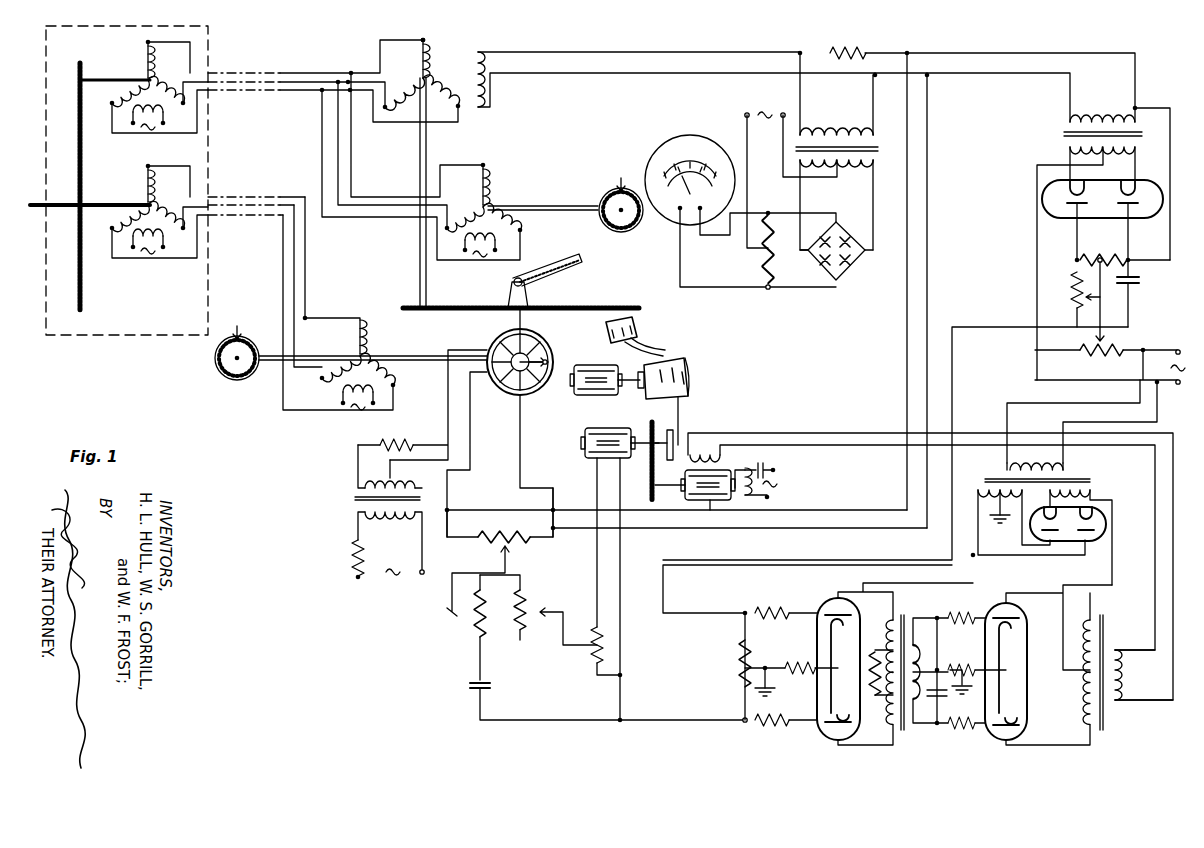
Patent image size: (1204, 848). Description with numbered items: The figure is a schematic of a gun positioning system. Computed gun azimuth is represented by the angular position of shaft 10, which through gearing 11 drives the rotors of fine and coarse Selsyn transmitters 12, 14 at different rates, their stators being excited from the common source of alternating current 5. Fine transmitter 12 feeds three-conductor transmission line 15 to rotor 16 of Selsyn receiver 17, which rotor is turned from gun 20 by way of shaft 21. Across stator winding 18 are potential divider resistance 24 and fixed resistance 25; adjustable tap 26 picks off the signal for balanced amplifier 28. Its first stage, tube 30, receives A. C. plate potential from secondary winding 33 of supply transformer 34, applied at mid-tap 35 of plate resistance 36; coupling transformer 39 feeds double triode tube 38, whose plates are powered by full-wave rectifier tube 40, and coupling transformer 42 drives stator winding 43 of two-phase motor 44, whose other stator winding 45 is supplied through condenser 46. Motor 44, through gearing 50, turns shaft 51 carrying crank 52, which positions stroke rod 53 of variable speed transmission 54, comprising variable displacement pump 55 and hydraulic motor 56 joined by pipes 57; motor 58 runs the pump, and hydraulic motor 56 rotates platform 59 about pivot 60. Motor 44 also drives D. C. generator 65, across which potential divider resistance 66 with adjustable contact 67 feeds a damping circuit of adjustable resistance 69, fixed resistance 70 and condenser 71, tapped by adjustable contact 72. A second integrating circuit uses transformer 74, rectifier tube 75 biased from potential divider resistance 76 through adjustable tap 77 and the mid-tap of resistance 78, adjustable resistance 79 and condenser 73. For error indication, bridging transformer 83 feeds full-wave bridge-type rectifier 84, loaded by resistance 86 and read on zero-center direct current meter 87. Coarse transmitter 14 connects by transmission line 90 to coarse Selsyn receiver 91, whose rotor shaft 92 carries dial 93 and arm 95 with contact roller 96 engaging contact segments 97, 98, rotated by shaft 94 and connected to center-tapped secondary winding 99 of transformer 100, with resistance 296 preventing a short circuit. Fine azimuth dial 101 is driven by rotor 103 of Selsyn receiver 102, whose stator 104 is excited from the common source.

The source of alternating current 5 is at (168, 138).
The shaft 10 is at (70, 208).
The gearing 11 is at (76, 96).
The fine Selsyn transmitter 12 is at (134, 55).
The coarse Selsyn transmitter 14 is at (118, 183).
The three-conductor transmission line 15 is at (287, 78).
The rotor 16 is at (418, 42).
The Selsyn receiver 17 is at (460, 31).
The stator winding 18 is at (478, 52).
The gun 20 is at (548, 280).
The shaft 21 is at (428, 148).
The potential divider resistance 24 is at (508, 532).
The fixed resistance 25 is at (837, 50).
The adjustable tap 26 is at (518, 550).
The balanced amplifier 28 is at (948, 753).
The tube 30 is at (814, 604).
The secondary winding 33 is at (978, 502).
The supply transformer 34 is at (1094, 481).
The mid-tap 35 is at (877, 687).
The plate resistance 36 is at (888, 632).
The double triode tube 38 is at (990, 610).
The coupling transformer 39 is at (906, 612).
The full-wave rectifier tube 40 is at (1108, 521).
The coupling transformer 42 is at (1093, 620).
The stator winding 43 is at (703, 428).
The two-phase motor 44 is at (712, 502).
The stator winding 45 is at (754, 495).
The condenser 46 is at (776, 471).
The gearing 50 is at (650, 481).
The shaft 51 is at (638, 424).
The crank 52 is at (664, 444).
The stroke rod 53 is at (686, 413).
The variable speed transmission 54 is at (630, 413).
The variable displacement pump 55 is at (688, 362).
The variable speed hydraulic motor 56 is at (638, 326).
The pipes 57 is at (664, 342).
The motor 58 is at (626, 358).
The platform 59 is at (598, 306).
The pivot 60 is at (514, 316).
The D. C. generator 65 is at (580, 438).
The potential divider resistance 66 is at (590, 662).
The adjustable contact 67 is at (578, 652).
The adjustable resistance 69 is at (537, 594).
The fixed resistance 70 is at (488, 637).
The condenser 71 is at (470, 676).
The adjustable contact 72 is at (464, 616).
The condenser 73 is at (1142, 286).
The transformer 74 is at (1060, 134).
The rectifier tube 75 is at (1042, 203).
The potential divider resistance 76 is at (1082, 370).
The adjustable tap 77 is at (1123, 342).
The resistance 78 is at (1096, 254).
The adjustable resistance 79 is at (1050, 292).
The bridging transformer 83 is at (870, 144).
The full-wave bridge-type rectifier 84 is at (886, 283).
The resistance 86 is at (776, 270).
The zero-center direct current meter 87 is at (686, 136).
The three-conductor transmission line 90 is at (246, 208).
The coarse Selsyn receiver 91 is at (396, 347).
The rotor shaft 92 is at (400, 398).
The dial 93 is at (244, 380).
The shaft 94 is at (528, 320).
The arm 95 is at (548, 346).
The contact roller 96 is at (550, 358).
The contact segment 97 is at (488, 344).
The contact segment 98 is at (508, 394).
The center-tapped secondary winding 99 is at (364, 480).
The transformer 100 is at (356, 497).
The fine azimuth angle dial 101 is at (604, 186).
The Selsyn receiver 102 is at (535, 189).
The rotor 103 is at (522, 224).
The stator 104 is at (500, 242).
The resistance 296 is at (384, 444).